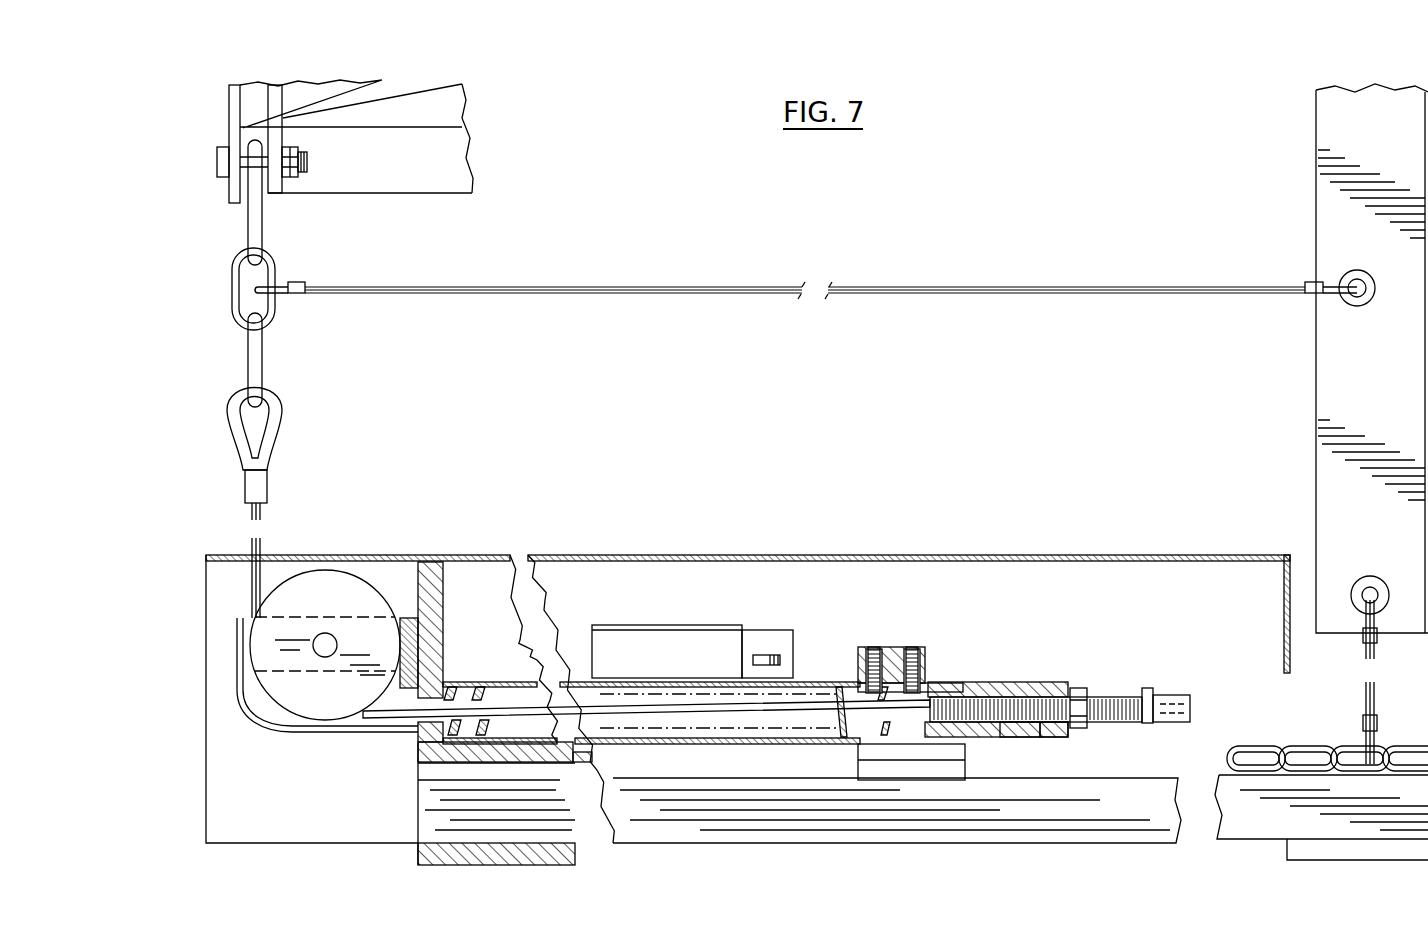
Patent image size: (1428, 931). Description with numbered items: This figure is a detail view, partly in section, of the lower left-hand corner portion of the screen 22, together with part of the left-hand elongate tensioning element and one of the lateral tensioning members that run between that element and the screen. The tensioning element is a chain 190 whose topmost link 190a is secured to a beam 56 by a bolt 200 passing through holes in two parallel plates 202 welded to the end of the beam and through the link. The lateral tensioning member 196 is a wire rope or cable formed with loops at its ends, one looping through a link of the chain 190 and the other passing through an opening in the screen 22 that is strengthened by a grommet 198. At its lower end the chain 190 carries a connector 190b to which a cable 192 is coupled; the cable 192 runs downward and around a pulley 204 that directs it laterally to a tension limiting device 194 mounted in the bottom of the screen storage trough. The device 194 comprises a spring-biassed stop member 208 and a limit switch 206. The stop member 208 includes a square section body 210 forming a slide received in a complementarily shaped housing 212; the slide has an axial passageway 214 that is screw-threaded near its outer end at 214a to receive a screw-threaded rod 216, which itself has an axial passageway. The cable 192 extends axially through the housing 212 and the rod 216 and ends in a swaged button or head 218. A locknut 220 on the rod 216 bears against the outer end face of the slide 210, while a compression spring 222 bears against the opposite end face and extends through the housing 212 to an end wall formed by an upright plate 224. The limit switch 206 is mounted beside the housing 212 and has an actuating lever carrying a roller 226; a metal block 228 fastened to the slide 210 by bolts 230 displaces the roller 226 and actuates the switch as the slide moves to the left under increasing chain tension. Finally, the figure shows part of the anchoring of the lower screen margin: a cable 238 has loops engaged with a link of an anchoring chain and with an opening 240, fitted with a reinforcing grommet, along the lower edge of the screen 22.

The screen 22 is at (1330, 241).
The beam 56 is at (495, 147).
The chain 190 is at (272, 356).
The topmost link 190a is at (256, 214).
The connector 190b is at (275, 418).
The cable 192 is at (262, 507).
The tension limiting device 194 is at (705, 606).
The lateral tensioning member 196 is at (922, 290).
The grommet 198 is at (1363, 276).
The bolt 200 is at (309, 163).
The parallel plates 202 is at (238, 112).
The pulley 204 is at (345, 588).
The limit switch 206 is at (647, 618).
The stop member 208 is at (1038, 676).
The square section body 210 is at (1052, 738).
The housing 212 is at (830, 744).
The axial passageway 214 is at (930, 686).
The screw-threaded portion 214a is at (1036, 738).
The screw-threaded rod 216 is at (1118, 695).
The swaged button or head 218 is at (1181, 698).
The locknut 220 is at (1088, 722).
The compression spring 222 is at (838, 677).
The upright plate 224 is at (440, 631).
The roller 226 is at (770, 655).
The metal block 228 is at (922, 655).
The bolts 230 is at (910, 648).
The cable 238 is at (1364, 702).
The opening 240 is at (1369, 580).